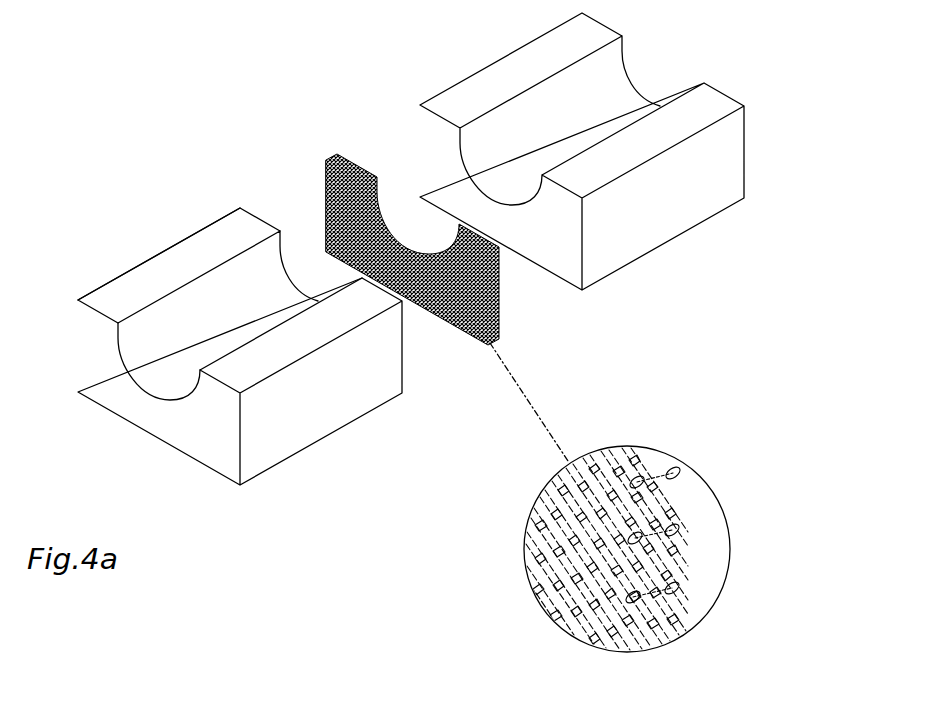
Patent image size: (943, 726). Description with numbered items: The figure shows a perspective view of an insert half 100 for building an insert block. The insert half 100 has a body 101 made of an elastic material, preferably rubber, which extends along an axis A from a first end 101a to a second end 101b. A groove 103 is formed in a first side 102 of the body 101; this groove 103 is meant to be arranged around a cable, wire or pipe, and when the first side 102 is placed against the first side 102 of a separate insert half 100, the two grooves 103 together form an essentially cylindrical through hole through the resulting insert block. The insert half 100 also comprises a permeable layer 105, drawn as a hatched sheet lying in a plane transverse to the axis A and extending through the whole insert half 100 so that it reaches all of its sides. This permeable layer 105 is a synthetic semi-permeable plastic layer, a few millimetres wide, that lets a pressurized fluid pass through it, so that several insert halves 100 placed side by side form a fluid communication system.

The insert half 100 is at (436, 249).
The body 101 is at (632, 151).
The first end 101a is at (215, 334).
The second end 101b is at (743, 138).
The first side 102 is at (154, 264).
The groove 103 is at (240, 292).
The permeable layer 105 is at (348, 160).